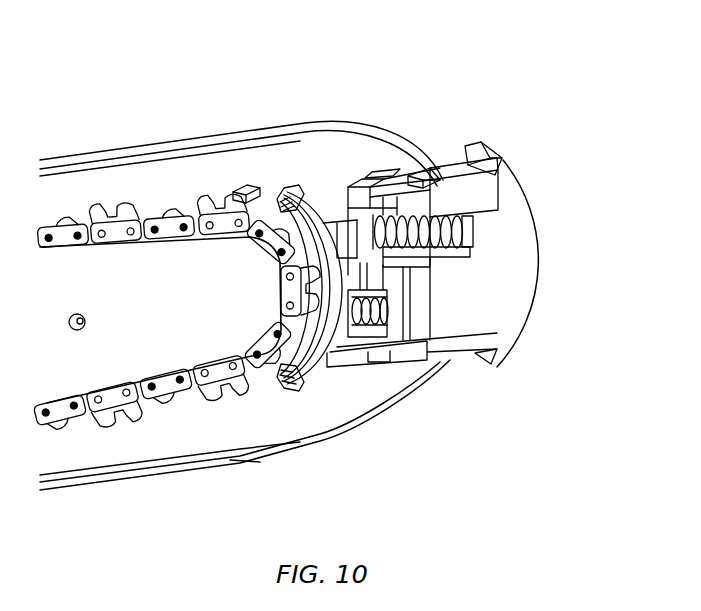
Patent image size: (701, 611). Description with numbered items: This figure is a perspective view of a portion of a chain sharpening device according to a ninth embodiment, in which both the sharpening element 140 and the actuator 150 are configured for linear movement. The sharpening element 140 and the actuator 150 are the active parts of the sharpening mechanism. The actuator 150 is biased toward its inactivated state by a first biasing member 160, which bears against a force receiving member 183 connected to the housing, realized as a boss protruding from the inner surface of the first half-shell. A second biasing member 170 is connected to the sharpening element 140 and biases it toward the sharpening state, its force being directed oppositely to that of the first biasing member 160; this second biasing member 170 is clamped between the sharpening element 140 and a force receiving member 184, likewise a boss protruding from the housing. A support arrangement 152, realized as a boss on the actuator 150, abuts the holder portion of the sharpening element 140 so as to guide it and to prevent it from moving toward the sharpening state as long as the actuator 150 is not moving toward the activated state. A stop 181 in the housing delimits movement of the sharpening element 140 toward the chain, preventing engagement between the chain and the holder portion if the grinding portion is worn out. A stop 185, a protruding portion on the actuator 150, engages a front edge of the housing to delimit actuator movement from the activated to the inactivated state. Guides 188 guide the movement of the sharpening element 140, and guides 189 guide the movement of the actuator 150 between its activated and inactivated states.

The sharpening element 140 is at (295, 182).
The actuator 150 is at (462, 263).
The support arrangement 152 is at (357, 179).
The first biasing member 160 is at (455, 238).
The second biasing member 170 is at (378, 323).
The stop 181 is at (243, 184).
The force receiving member 183 is at (363, 243).
The force receiving member 184 is at (380, 312).
The stop 185 is at (447, 162).
The guides 188 is at (283, 264).
The guides 189 is at (390, 172).